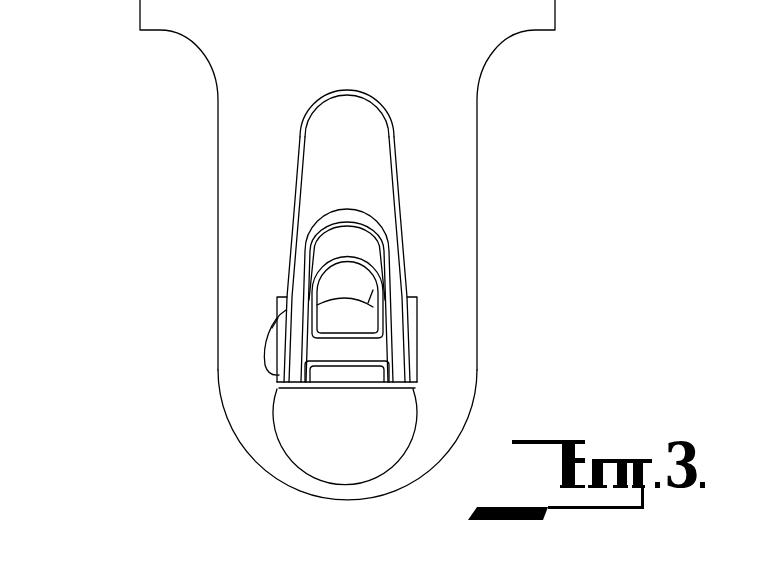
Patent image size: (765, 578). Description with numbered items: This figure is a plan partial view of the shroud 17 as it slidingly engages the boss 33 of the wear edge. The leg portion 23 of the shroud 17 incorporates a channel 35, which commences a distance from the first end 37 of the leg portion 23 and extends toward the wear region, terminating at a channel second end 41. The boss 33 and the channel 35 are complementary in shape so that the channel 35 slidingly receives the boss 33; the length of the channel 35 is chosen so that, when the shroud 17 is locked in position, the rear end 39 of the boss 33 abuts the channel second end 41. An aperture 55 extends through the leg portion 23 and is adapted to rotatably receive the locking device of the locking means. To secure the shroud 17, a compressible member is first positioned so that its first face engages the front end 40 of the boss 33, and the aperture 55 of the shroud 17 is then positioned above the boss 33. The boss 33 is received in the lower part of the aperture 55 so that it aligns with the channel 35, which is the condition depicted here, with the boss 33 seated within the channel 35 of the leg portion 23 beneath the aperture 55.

The shroud 17 is at (452, 178).
The leg portion 23 is at (448, 217).
The boss 33 is at (393, 337).
The channel 35 is at (325, 155).
The first end 37 is at (325, 470).
The rear end 39 is at (337, 207).
The front end 40 is at (347, 363).
The channel second end 41 is at (348, 97).
The aperture 55 is at (412, 415).